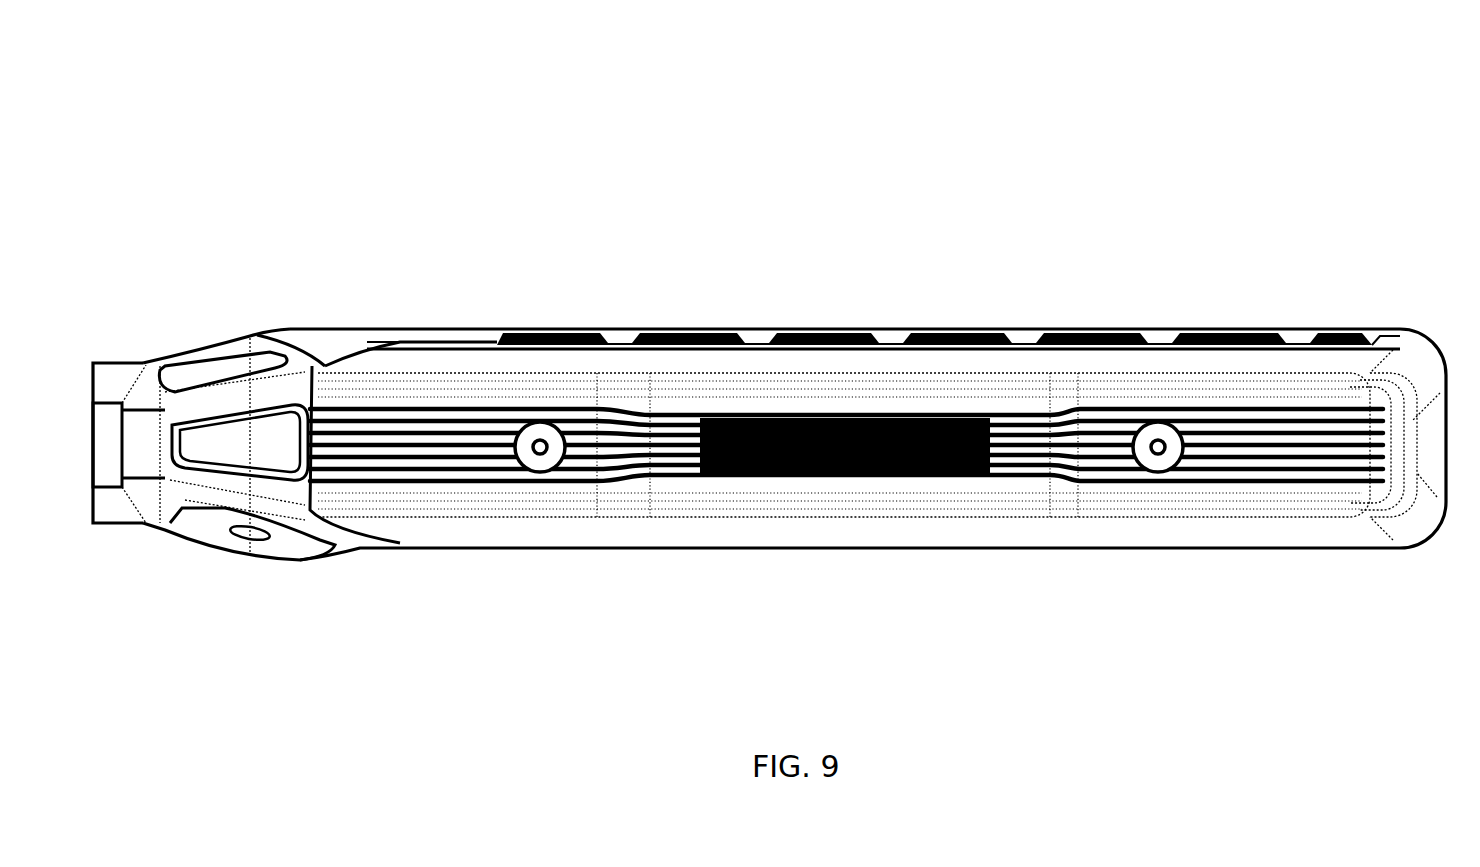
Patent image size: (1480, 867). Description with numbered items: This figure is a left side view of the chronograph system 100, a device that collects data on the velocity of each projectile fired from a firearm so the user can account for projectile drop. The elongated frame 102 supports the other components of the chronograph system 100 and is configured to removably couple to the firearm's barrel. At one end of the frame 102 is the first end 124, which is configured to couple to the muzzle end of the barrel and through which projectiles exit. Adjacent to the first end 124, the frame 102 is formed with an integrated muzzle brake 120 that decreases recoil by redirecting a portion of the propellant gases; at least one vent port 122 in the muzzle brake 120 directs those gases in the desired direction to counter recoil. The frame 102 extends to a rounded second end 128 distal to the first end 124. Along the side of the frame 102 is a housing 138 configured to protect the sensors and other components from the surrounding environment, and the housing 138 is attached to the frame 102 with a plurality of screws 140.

The chronograph system 100 is at (422, 130).
The frame 102 is at (431, 330).
The muzzle brake 120 is at (291, 348).
The vent port 122 is at (218, 447).
The first end 124 is at (95, 525).
The second end 128 is at (1433, 350).
The housing 138 is at (857, 520).
The screws 140 is at (532, 468).